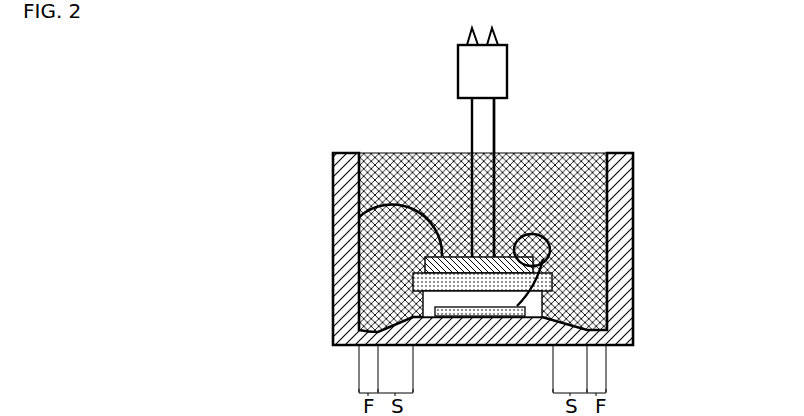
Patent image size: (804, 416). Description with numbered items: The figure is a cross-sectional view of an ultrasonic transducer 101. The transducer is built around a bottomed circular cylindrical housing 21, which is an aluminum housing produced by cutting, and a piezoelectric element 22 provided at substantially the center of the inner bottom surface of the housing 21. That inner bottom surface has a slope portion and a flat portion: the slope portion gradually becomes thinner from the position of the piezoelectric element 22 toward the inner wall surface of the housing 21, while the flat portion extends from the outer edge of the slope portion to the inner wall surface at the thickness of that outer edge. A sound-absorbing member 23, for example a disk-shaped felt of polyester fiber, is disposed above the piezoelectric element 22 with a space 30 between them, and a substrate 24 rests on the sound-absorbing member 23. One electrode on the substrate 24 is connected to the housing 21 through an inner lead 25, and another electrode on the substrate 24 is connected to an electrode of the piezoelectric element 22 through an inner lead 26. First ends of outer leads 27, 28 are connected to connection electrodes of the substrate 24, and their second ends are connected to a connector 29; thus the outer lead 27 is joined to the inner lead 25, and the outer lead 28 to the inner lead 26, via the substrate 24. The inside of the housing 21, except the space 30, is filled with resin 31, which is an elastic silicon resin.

The ultrasonic transducer 101 is at (662, 124).
The housing 21 is at (625, 222).
The piezoelectric element 22 is at (487, 314).
The sound-absorbing member 23 is at (553, 282).
The substrate 24 is at (555, 260).
The inner lead 25 is at (392, 203).
The inner lead 26 is at (537, 238).
The outer lead 27 is at (474, 117).
The outer lead 28 is at (495, 142).
The connector 29 is at (498, 72).
The space 30 is at (542, 300).
The resin 31 is at (377, 277).